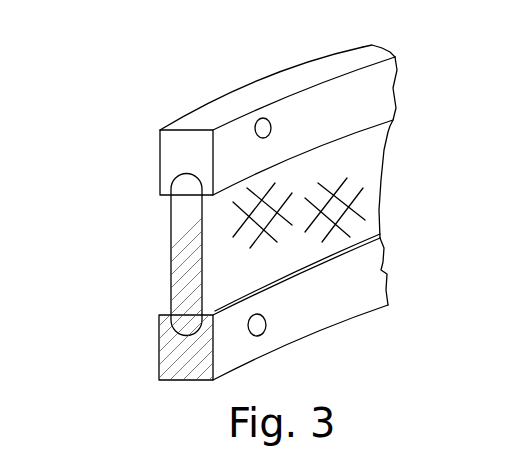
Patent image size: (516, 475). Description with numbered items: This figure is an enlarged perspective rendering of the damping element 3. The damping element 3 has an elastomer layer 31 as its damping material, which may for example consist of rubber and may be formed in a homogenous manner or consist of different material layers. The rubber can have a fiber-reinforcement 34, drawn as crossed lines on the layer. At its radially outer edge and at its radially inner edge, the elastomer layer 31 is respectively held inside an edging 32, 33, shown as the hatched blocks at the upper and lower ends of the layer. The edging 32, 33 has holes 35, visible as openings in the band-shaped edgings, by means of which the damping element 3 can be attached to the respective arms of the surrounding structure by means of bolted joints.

The damping element 3 is at (92, 273).
The elastomer layer 31 is at (173, 231).
The edging 32 is at (172, 148).
The edging 33 is at (182, 364).
The fiber-reinforcement 34 is at (326, 226).
The holes 35 is at (262, 117).